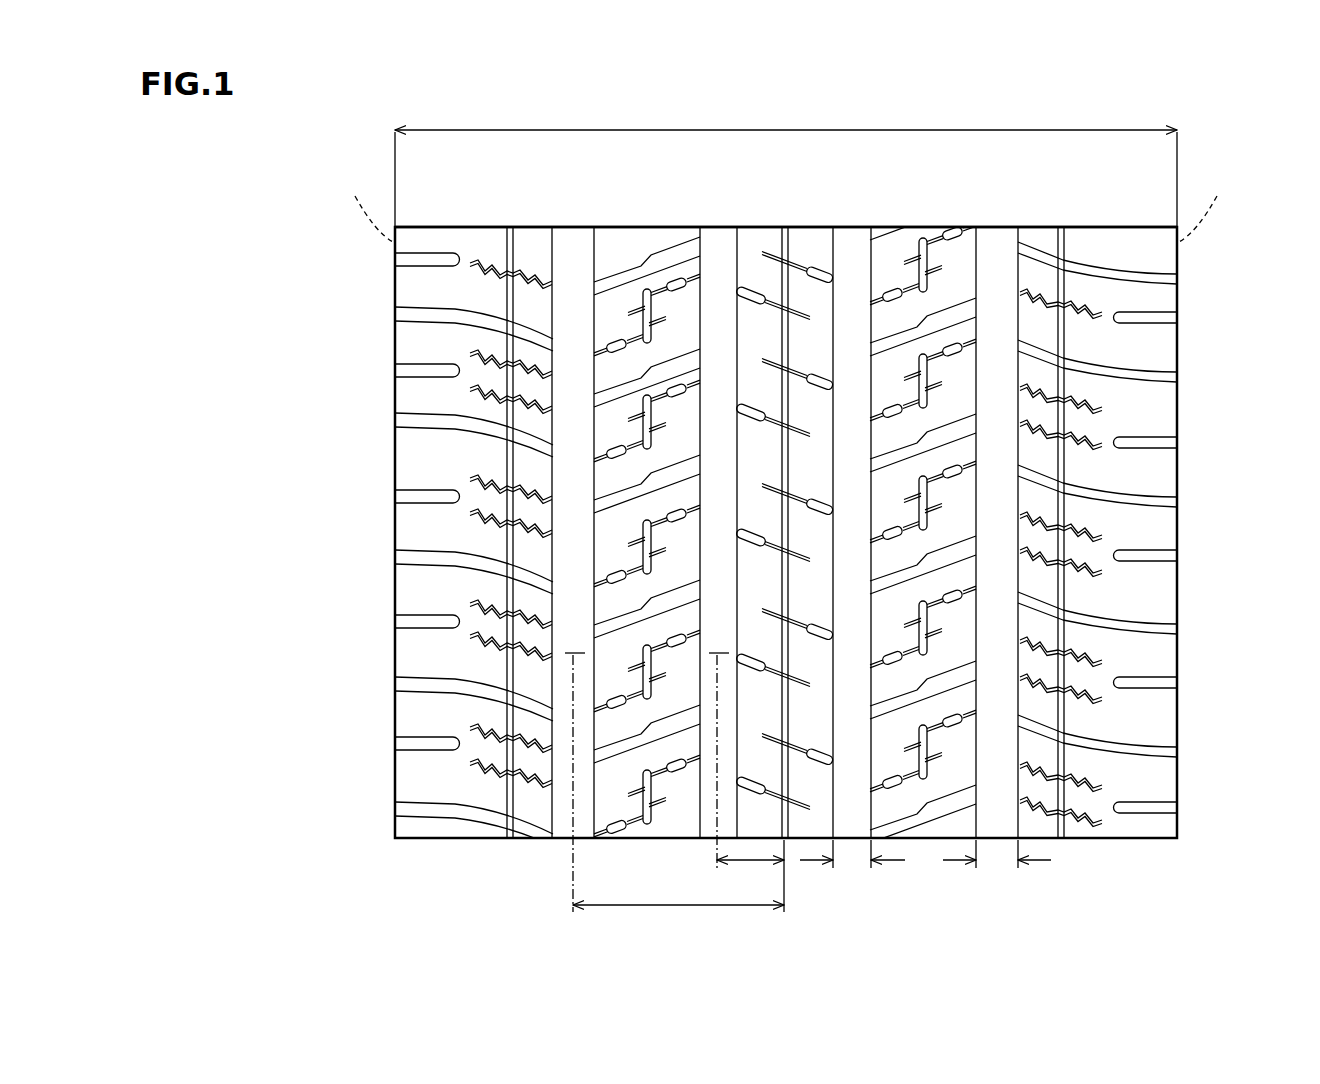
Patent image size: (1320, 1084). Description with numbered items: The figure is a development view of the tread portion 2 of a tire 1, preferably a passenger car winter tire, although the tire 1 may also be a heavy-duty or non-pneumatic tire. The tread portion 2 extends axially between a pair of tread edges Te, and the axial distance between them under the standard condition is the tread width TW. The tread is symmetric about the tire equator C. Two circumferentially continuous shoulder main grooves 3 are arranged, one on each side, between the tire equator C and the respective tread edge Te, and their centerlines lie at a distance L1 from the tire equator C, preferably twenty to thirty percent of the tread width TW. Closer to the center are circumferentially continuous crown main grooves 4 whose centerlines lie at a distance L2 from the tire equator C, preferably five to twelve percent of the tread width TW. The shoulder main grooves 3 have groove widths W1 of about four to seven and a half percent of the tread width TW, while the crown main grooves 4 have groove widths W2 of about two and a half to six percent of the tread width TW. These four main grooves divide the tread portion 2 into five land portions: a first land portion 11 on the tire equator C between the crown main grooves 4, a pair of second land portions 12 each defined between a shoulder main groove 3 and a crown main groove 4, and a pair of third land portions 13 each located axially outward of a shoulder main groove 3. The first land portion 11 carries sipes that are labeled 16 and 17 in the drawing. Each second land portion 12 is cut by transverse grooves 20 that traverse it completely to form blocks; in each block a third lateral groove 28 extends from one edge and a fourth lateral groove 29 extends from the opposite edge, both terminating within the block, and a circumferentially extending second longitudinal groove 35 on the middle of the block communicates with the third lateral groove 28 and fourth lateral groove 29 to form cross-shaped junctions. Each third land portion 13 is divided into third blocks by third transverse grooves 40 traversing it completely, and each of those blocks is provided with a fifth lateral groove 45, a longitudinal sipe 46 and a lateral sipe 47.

The tire 1 is at (1046, 222).
The tread portion 2 is at (952, 222).
The shoulder main groove 3 is at (571, 280).
The crown main groove 4 is at (715, 280).
The first land portion 11 is at (800, 300).
The second land portion 12 is at (658, 290).
The third land portion 13 is at (453, 290).
The center sipe 16 is at (752, 422).
The center sipe 17 is at (815, 385).
The transverse groove 20 is at (630, 500).
The third lateral groove 28 is at (612, 584).
The fourth lateral groove 29 is at (687, 510).
The second longitudinal groove 35 is at (645, 428).
The third transverse groove 40 is at (440, 316).
The fifth lateral groove 45 is at (432, 746).
The longitudinal sipe 46 is at (1062, 632).
The lateral sipe 47 is at (1080, 690).
The tire equator C is at (786, 226).
The tread edge Te is at (785, 206).
The tread width TW is at (786, 162).
The distance L1 is at (674, 794).
The distance L2 is at (746, 773).
The groove width W1 is at (997, 867).
The groove width W2 is at (852, 867).